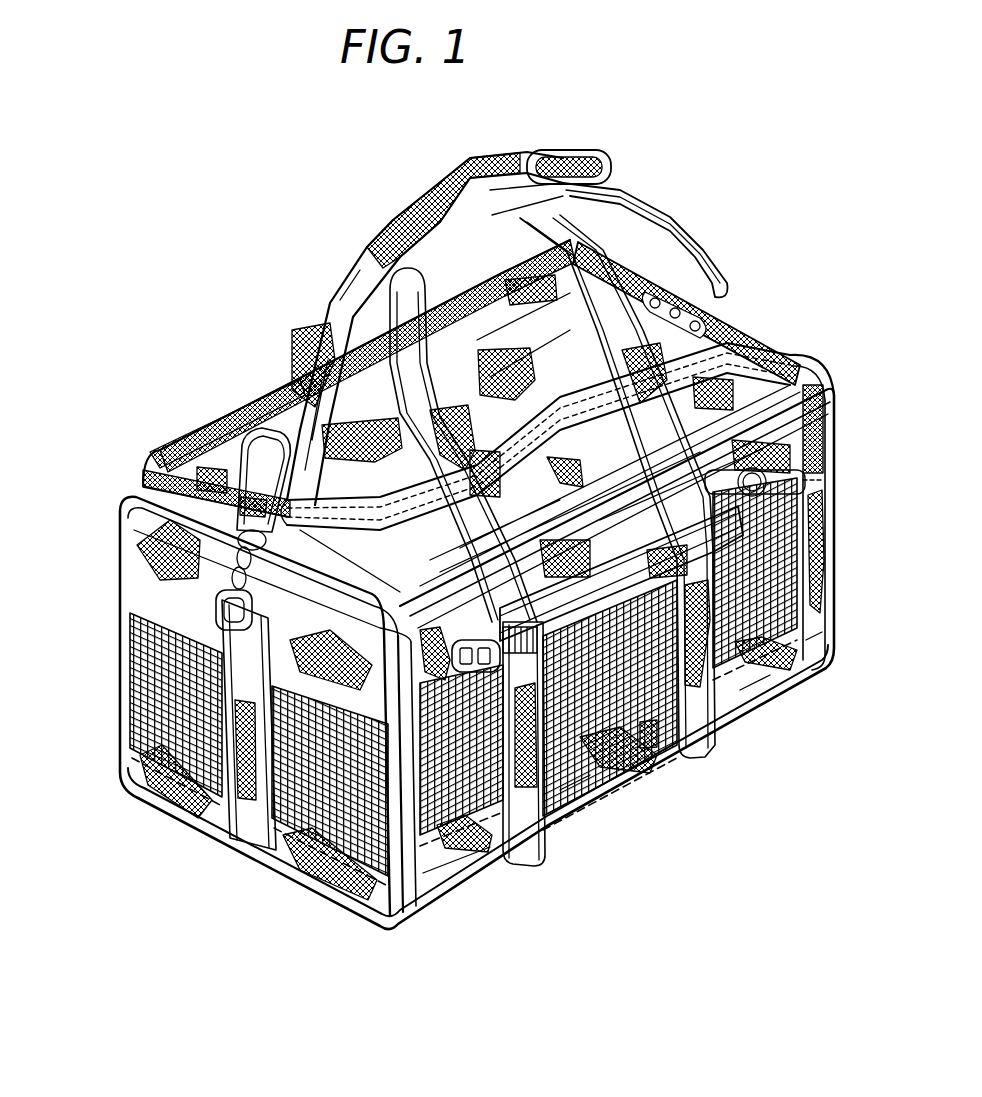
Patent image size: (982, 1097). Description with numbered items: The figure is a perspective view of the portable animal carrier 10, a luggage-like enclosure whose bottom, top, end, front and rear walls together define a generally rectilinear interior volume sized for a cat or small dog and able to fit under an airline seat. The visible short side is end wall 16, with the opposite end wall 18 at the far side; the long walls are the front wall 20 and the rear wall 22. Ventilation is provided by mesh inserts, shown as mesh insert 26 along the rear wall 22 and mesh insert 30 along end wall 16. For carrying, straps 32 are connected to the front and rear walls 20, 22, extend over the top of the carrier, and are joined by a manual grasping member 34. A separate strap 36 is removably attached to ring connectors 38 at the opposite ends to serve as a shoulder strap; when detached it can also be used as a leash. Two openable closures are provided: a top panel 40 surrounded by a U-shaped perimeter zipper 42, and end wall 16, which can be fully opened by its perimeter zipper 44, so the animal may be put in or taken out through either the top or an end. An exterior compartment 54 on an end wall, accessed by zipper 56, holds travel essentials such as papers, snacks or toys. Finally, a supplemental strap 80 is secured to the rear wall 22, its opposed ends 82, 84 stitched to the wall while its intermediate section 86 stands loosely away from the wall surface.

The portable animal carrier 10 is at (116, 427).
The end wall 16 is at (310, 857).
The end wall 18 is at (780, 343).
The front wall 20 is at (140, 487).
The rear wall 22 is at (590, 780).
The mesh material insert 26 is at (481, 878).
The mesh material insert 30 is at (147, 745).
The straps 32 is at (440, 400).
The manual grasping member 34 is at (525, 232).
The strap 36 is at (343, 293).
The ring connectors 38 is at (264, 604).
The top panel 40 is at (292, 378).
The U-shaped perimeter zipper 42 is at (587, 413).
The perimeter zipper 44 is at (404, 913).
The compartment 54 is at (822, 497).
The zipper 56 is at (823, 437).
The supplemental strap 80 is at (577, 572).
The end of supplemental strap 82 is at (446, 567).
The end of supplemental strap 84 is at (826, 374).
The intermediate section 86 is at (630, 580).